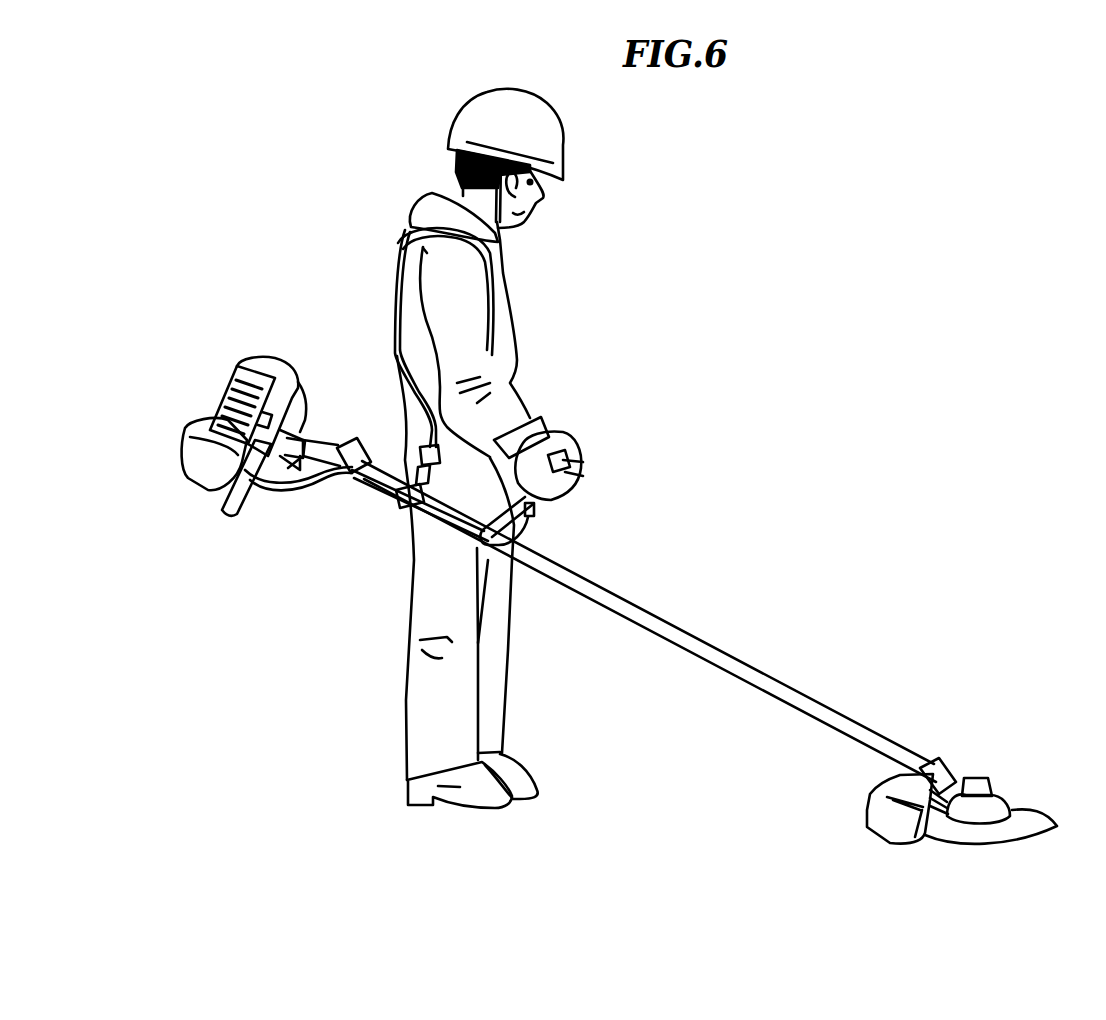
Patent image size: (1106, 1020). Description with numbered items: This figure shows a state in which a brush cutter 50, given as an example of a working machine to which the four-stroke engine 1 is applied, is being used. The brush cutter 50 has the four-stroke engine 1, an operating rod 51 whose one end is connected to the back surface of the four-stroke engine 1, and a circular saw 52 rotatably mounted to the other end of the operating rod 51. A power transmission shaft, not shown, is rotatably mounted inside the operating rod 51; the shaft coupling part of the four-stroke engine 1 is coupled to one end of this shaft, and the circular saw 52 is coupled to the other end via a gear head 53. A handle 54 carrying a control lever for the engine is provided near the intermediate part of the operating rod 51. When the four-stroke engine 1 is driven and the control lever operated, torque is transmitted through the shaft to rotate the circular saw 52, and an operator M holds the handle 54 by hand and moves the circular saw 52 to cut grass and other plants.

The four-stroke engine 1 is at (200, 493).
The brush cutter 50 is at (712, 658).
The operating rod 51 is at (697, 662).
The circular saw 52 is at (1028, 843).
The gear head 53 is at (982, 778).
The handle 54 is at (585, 468).
The operator M is at (400, 258).